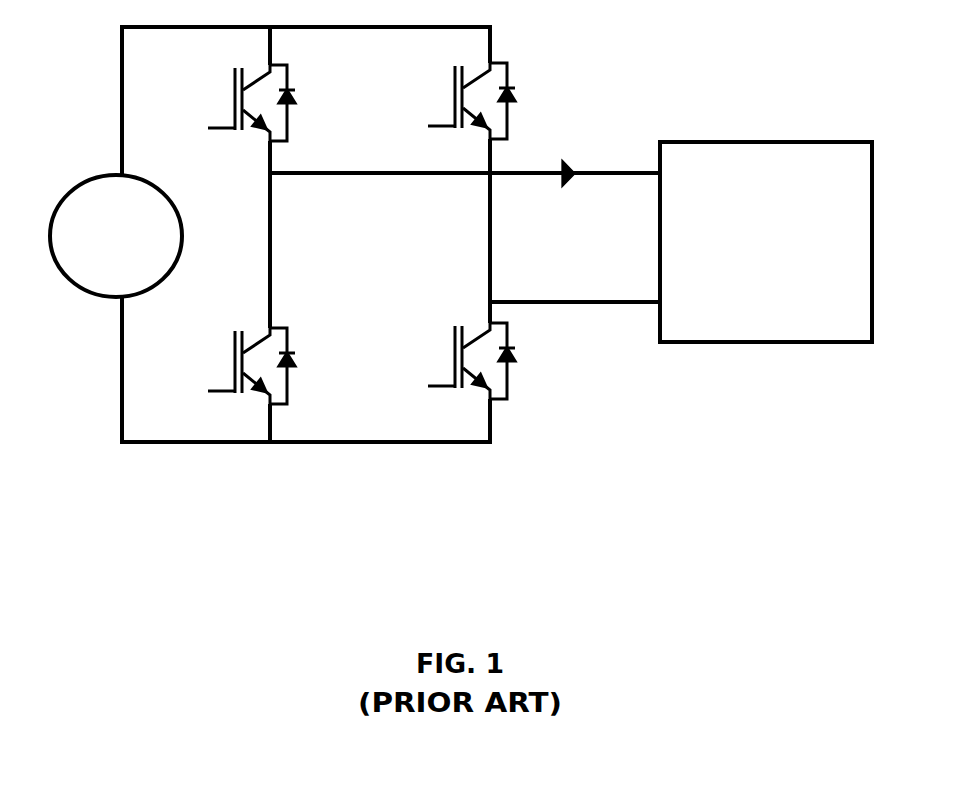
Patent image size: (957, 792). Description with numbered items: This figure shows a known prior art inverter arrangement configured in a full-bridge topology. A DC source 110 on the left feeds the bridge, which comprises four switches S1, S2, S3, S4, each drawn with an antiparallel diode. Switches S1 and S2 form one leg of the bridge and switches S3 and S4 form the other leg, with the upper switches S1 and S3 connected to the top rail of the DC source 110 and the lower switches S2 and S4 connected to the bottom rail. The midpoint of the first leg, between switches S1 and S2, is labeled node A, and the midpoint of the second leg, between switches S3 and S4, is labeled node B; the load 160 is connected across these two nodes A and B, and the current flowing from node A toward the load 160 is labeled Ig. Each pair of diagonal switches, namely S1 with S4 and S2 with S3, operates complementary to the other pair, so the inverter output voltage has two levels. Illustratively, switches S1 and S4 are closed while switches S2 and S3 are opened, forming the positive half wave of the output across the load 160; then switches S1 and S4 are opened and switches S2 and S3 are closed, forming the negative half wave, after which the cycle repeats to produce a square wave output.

The DC source 110 is at (92, 266).
The load 160 is at (790, 275).
The switch S1 is at (247, 103).
The switch S2 is at (247, 366).
The switch S3 is at (468, 101).
The switch S4 is at (468, 361).
The node A is at (453, 172).
The node B is at (564, 302).
The output current Ig is at (563, 160).